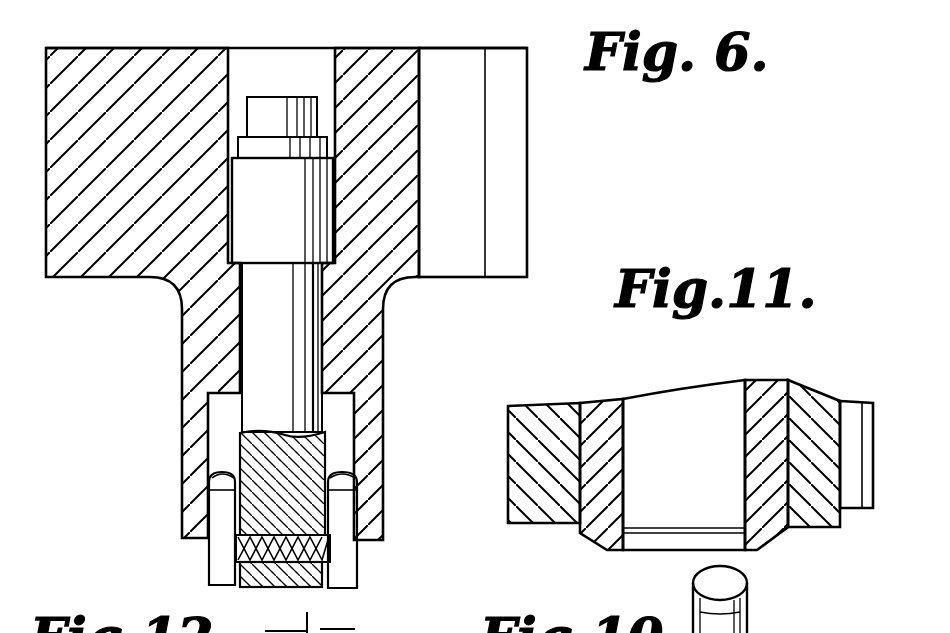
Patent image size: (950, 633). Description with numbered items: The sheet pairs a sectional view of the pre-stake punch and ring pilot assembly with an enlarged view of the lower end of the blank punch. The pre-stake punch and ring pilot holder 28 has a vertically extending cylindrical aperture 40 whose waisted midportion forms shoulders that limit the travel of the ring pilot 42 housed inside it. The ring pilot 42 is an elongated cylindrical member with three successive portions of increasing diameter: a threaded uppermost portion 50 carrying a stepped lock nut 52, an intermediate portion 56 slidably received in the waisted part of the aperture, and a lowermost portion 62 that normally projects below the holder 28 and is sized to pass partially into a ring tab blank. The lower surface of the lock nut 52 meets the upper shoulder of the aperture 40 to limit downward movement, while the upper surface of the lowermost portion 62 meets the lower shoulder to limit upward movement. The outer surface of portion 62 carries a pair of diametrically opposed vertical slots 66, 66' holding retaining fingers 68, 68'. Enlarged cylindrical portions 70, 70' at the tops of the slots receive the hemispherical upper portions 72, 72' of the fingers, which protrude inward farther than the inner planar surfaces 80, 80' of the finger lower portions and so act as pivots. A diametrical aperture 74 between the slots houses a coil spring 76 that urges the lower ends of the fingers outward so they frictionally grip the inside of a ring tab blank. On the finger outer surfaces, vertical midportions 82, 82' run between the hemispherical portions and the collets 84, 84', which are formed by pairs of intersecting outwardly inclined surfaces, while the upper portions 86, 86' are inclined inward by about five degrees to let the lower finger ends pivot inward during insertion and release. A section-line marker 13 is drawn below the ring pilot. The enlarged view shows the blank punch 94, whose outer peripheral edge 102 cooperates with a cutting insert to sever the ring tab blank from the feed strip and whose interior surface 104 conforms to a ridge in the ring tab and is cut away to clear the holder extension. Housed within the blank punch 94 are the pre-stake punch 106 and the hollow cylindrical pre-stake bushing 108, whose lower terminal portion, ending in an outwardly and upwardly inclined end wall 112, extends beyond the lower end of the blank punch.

In FIG. 6, the section line 13 is at (314, 620).
In FIG. 6, the pre-stake punch and ring pilot holder 28 is at (115, 297).
In FIG. 6, the cylindrical aperture 40 is at (233, 78).
In FIG. 6, the ring pilot 42 is at (268, 345).
In FIG. 6, the lock nut 52 is at (282, 180).
In FIG. 6, the intermediate portion 56 is at (282, 347).
In FIG. 6, the lowermost portion 62 is at (385, 405).
In FIG. 6, the slot 66 is at (184, 528).
In FIG. 6, the slot 66' is at (381, 530).
In FIG. 6, the finger 68 is at (184, 558).
In FIG. 6, the finger 68' is at (391, 553).
In FIG. 6, the enlarged cylindrical shaped portion 70 is at (230, 478).
In FIG. 6, the enlarged cylindrical shaped portion 70' is at (303, 456).
In FIG. 6, the hemispherical portion 72 is at (177, 505).
In FIG. 6, the hemispherical portion 72' is at (382, 481).
In FIG. 6, the aperture 74 is at (280, 588).
In FIG. 6, the coil spring 76 is at (246, 588).
In FIG. 6, the inner planar surface 80 is at (268, 519).
In FIG. 6, the inner planar surface 80' is at (295, 494).
In FIG. 6, the midportion of outer surface 82 is at (171, 546).
In FIG. 6, the midportion of outer surface 82' is at (393, 526).
In FIG. 6, the collet 84 is at (191, 573).
In FIG. 6, the collet 84' is at (399, 580).
In FIG. 6, the inclined upper portion of outer surface 86 is at (179, 485).
In FIG. 6, the inclined upper portion of outer surface 86' is at (396, 461).
In FIG. 11, the blank punch 94 is at (552, 420).
In FIG. 11, the outer peripheral edge 102 is at (508, 526).
In FIG. 11, the interior surface 104 is at (840, 518).
In FIG. 11, the pre-stake punch 106 is at (660, 455).
In FIG. 11, the pre-stake bushing 108 is at (600, 414).
In FIG. 11, the end wall 112 is at (600, 545).
In FIG. 11, the uppermost portion 50 is at (752, 628).